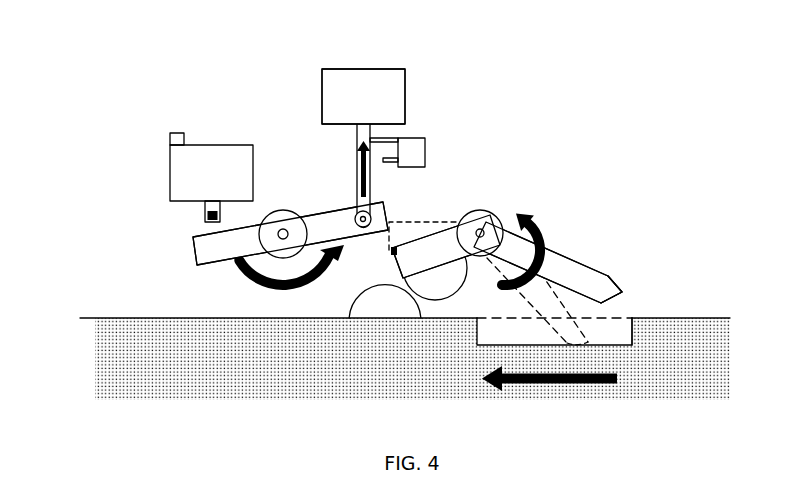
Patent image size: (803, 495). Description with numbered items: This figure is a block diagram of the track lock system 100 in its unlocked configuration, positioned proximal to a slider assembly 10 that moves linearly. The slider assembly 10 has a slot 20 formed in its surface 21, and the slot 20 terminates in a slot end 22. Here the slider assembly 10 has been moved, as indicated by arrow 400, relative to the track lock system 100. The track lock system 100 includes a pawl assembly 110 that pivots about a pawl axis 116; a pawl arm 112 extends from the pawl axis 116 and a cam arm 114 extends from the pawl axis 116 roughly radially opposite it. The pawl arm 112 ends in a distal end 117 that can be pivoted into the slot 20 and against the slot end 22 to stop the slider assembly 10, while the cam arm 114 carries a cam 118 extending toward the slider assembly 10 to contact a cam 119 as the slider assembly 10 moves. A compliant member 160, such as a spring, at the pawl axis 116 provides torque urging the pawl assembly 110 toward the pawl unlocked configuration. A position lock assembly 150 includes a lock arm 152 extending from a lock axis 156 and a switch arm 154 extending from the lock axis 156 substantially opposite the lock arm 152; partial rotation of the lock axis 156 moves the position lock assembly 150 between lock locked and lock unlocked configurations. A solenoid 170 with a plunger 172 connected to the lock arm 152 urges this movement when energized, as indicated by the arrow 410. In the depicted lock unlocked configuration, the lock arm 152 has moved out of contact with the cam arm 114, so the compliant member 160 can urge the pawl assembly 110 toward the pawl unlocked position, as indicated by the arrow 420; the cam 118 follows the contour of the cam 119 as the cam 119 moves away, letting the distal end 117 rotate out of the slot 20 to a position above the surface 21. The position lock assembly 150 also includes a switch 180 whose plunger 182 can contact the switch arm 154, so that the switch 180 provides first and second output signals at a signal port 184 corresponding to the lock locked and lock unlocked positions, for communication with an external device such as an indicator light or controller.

The track lock system 100 is at (94, 53).
The slider assembly 10 is at (57, 311).
The slot 20 is at (630, 308).
The surface 21 is at (112, 318).
The slot end 22 is at (632, 345).
The pawl assembly 110 is at (520, 160).
The pawl arm 112 is at (594, 257).
The cam arm 114 is at (430, 237).
The pawl axis 116 is at (481, 226).
The distal end 117 is at (623, 294).
The cam 118 is at (467, 287).
The cam 119 is at (350, 307).
The position lock assembly 150 is at (446, 124).
The lock arm 152 is at (348, 207).
The switch arm 154 is at (193, 255).
The lock axis 156 is at (283, 210).
The compliant member 160 is at (518, 213).
The solenoid 170 is at (323, 69).
The plunger 172 is at (357, 152).
The switch 180 is at (226, 145).
The plunger 182 is at (205, 208).
The signal port 184 is at (171, 133).
The arrow 400 is at (572, 385).
The arrow 410 is at (240, 275).
The arrow 420 is at (548, 243).